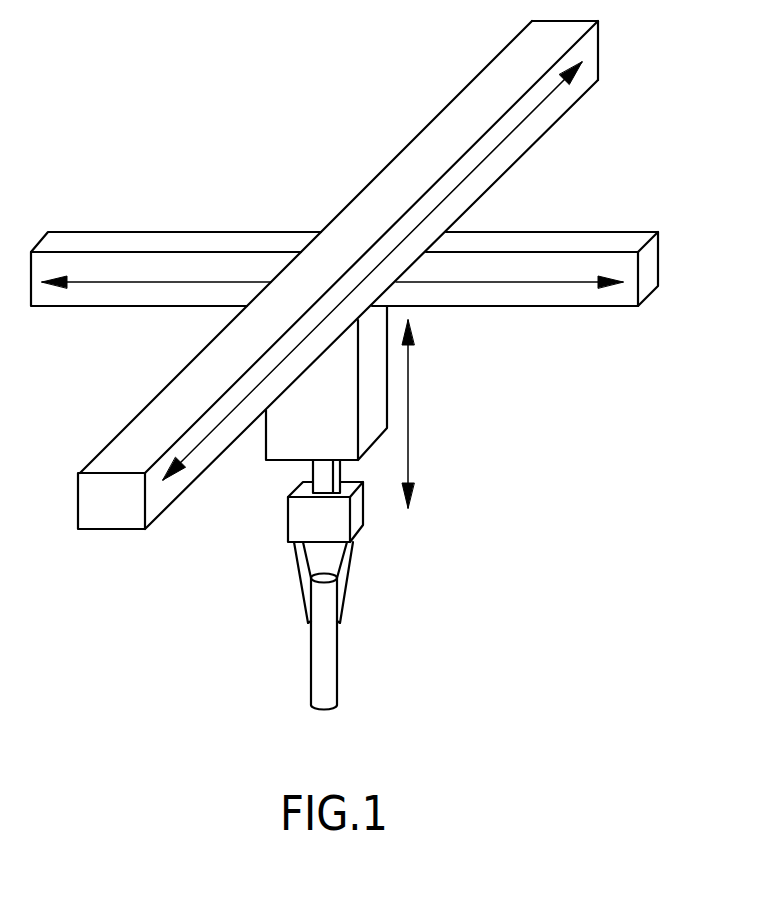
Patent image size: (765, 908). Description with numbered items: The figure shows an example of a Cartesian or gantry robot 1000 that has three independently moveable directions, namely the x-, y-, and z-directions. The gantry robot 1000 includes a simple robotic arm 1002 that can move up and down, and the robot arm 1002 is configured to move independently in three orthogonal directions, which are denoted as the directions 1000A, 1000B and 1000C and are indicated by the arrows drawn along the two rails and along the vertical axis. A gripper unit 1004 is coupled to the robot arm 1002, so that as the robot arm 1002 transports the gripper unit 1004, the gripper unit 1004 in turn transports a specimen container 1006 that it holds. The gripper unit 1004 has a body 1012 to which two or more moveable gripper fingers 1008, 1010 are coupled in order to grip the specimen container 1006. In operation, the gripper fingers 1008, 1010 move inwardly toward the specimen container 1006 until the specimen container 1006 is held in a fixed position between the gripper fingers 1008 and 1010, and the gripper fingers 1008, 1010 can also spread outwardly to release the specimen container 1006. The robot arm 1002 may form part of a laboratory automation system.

The gantry robot 1000 is at (97, 231).
The first orthogonal direction 1000A is at (585, 307).
The second orthogonal direction 1000B is at (412, 425).
The third orthogonal direction 1000C is at (548, 127).
The robotic arm 1002 is at (343, 440).
The gripper unit 1004 is at (288, 495).
The body 1012 is at (288, 520).
The gripper finger 1008 is at (300, 567).
The gripper finger 1010 is at (343, 585).
The specimen container 1006 is at (337, 680).